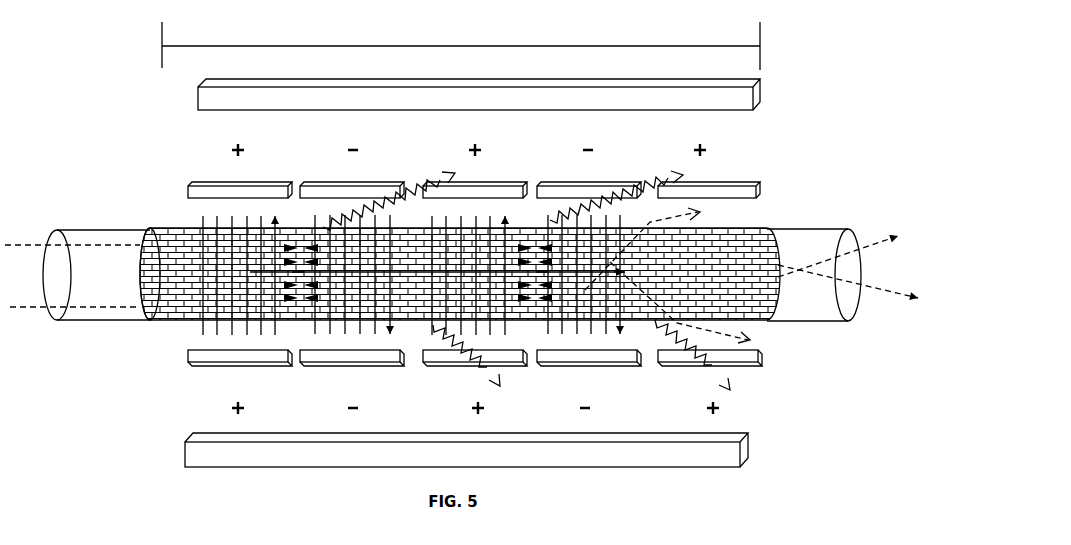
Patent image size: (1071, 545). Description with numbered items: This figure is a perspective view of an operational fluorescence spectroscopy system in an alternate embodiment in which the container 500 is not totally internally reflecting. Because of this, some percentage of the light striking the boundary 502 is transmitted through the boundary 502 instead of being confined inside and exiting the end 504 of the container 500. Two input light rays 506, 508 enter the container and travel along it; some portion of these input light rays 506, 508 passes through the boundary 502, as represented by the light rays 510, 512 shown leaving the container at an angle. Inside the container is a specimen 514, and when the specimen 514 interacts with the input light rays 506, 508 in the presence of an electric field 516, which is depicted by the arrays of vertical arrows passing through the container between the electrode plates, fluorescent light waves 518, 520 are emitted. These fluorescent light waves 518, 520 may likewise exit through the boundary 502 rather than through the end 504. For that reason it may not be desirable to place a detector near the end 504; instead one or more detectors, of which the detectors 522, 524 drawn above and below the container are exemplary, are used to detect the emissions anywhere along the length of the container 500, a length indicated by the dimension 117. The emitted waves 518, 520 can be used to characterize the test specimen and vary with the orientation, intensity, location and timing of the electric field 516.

The length dimension 117 is at (461, 46).
The detector 522 is at (479, 94).
The detector 524 is at (466, 450).
The input light ray 506 is at (36, 246).
The input light ray 508 is at (33, 308).
The boundary 502 is at (172, 312).
The specimen 514 is at (142, 240).
The end of container 504 is at (774, 237).
The container 500 is at (481, 273).
The electric field 516 is at (200, 232).
The fluorescent light wave 520 is at (415, 190).
The light ray 512 is at (690, 212).
The fluorescent light wave 518 is at (490, 368).
The light ray 510 is at (732, 340).